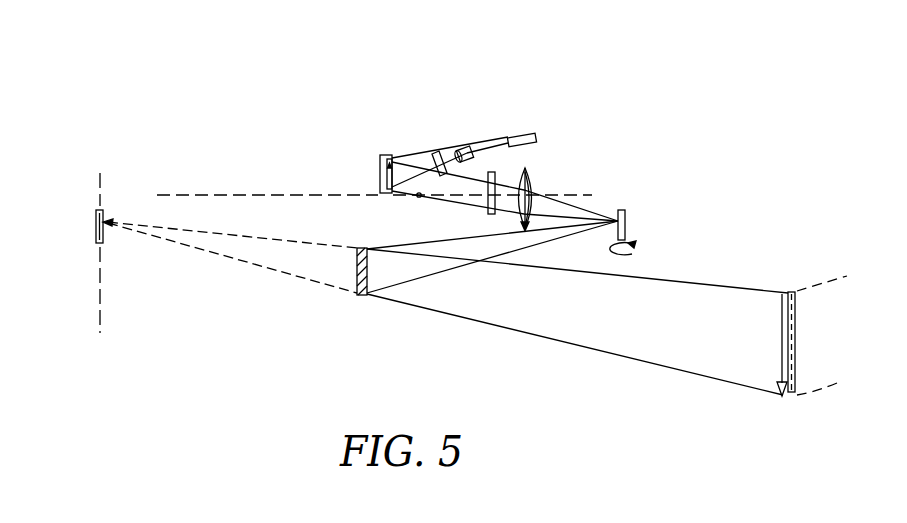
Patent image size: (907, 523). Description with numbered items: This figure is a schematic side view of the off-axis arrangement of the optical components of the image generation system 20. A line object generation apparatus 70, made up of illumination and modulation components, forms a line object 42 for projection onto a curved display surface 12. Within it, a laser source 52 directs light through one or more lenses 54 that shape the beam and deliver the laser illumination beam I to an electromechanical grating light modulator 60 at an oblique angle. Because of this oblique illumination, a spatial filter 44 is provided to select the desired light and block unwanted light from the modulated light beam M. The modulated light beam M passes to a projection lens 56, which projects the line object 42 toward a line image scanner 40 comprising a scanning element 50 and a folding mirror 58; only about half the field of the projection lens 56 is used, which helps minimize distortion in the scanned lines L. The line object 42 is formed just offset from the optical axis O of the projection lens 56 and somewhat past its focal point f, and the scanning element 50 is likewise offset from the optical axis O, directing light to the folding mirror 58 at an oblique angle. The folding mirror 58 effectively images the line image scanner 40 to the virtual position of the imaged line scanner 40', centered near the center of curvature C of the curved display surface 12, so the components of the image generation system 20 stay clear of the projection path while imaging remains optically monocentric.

The curved display surface 12 is at (797, 338).
The image generation system 20 is at (215, 366).
The line image scanner 40 is at (749, 140).
The imaged line scanner 40' is at (226, 251).
The line object 42 is at (390, 158).
The spatial filter 44 is at (490, 210).
The scanning element 50 is at (626, 234).
The laser source 52 is at (536, 142).
The lenses 54 is at (460, 153).
The projection lens 56 is at (536, 178).
The folding mirror 58 is at (357, 297).
The electromechanical grating light modulator 60 is at (381, 172).
The line object generation apparatus 70 is at (263, 122).
The laser illumination beam I is at (410, 153).
The optical axis O is at (362, 192).
The focal point f is at (419, 198).
The modulated light beam M is at (588, 211).
The center of curvature C is at (101, 271).
The scanned lines L is at (785, 397).